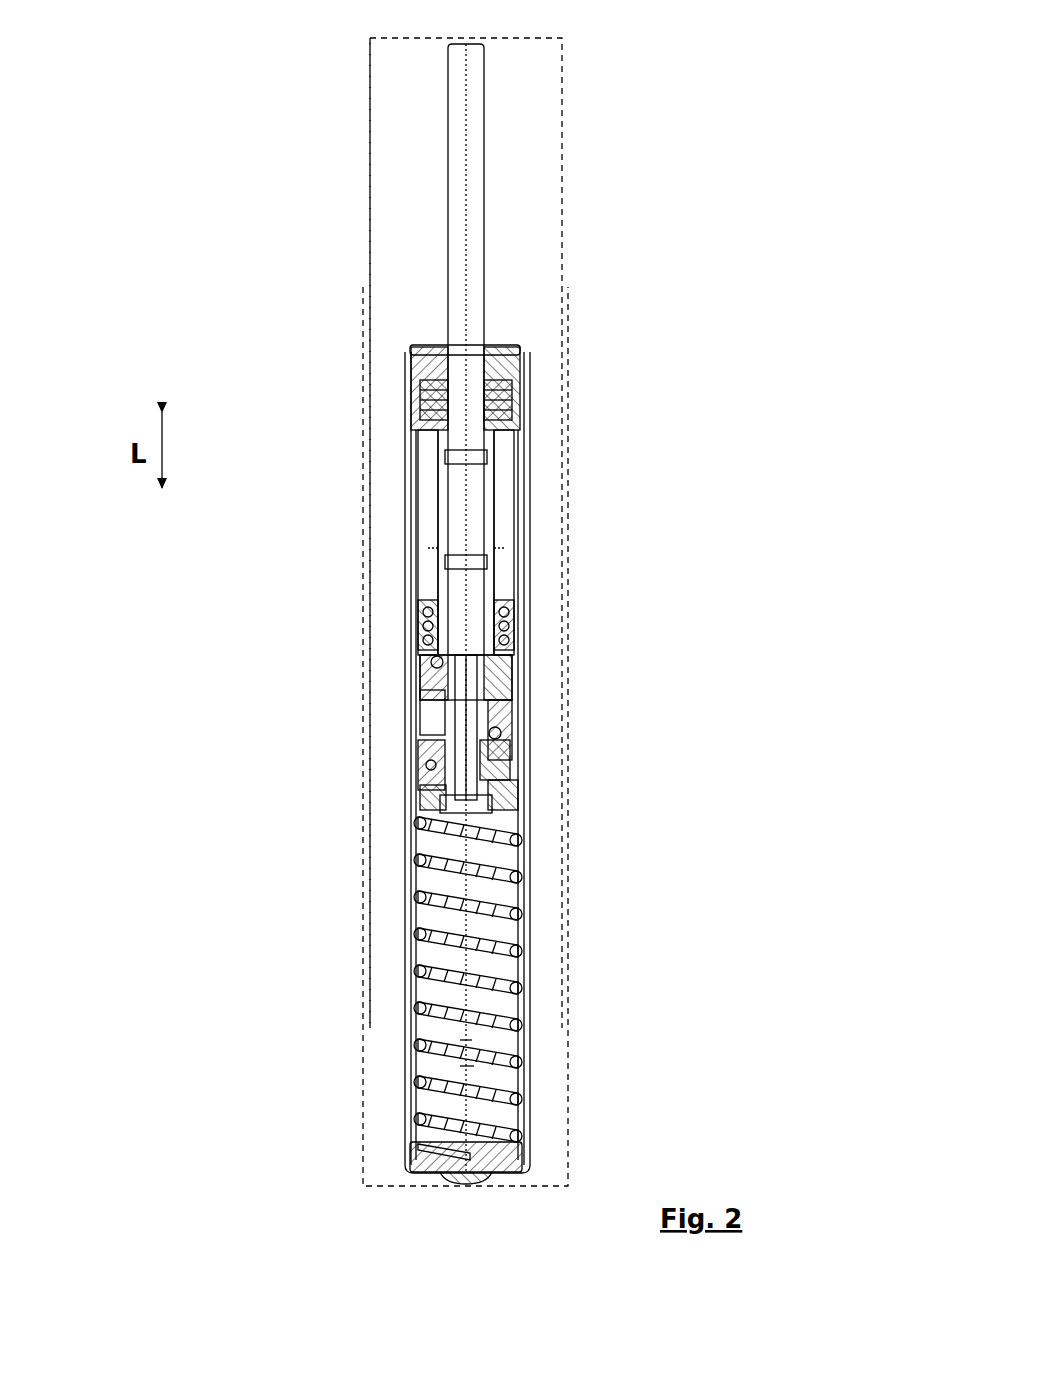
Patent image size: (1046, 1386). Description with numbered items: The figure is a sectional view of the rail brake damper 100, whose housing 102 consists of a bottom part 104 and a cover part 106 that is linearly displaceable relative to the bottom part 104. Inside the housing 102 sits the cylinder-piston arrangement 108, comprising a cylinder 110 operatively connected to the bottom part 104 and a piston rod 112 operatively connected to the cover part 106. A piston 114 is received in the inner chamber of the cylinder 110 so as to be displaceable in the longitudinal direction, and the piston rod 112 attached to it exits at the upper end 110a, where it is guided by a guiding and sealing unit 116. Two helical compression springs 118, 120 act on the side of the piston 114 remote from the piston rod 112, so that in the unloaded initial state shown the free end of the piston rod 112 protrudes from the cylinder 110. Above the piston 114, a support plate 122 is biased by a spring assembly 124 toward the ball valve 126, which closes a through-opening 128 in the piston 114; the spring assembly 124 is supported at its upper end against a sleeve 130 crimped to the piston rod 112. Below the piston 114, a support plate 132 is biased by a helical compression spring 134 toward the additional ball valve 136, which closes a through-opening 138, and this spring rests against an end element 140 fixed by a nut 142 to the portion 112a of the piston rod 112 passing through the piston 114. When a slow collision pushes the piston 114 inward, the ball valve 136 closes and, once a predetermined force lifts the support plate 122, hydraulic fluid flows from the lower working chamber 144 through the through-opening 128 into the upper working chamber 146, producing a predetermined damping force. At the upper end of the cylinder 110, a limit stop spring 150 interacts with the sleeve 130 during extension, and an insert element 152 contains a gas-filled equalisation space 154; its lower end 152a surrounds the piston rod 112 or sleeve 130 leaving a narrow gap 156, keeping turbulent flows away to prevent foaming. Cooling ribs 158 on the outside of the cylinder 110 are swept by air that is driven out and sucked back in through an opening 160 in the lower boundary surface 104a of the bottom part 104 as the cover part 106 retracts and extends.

The rail brake damper 100 is at (282, 100).
The housing 102 is at (265, 170).
The bottom part 104 is at (365, 1050).
The lower boundary surface 104a is at (385, 1188).
The cover part 106 is at (370, 262).
The cylinder-piston arrangement 108 is at (630, 100).
The cylinder 110 is at (522, 940).
The upper end of the cylinder 110a is at (520, 345).
The piston rod 112 is at (476, 278).
The portion of the piston rod 112a is at (462, 712).
The piston 114 is at (510, 668).
The guiding and sealing unit 116 is at (425, 363).
The helical compression spring 118 is at (478, 1052).
The helical compression spring 120 is at (472, 1068).
The support plate 122 is at (500, 652).
The spring assembly 124 is at (440, 630).
The ball valve 126 is at (436, 662).
The through-opening 128 is at (440, 695).
The sleeve 130 is at (448, 507).
The support plate 132 is at (505, 748).
The helical compression spring 134 is at (440, 773).
The additional ball valve 136 is at (497, 733).
The through-opening 138 is at (502, 692).
The end element 140 is at (515, 795).
The nut 142 is at (455, 805).
The lower working chamber 144 is at (450, 960).
The upper working chamber 146 is at (512, 620).
The limit stop spring 150 is at (505, 408).
The insert element 152 is at (518, 513).
The lower end of the insert element 152a is at (500, 600).
The equalisation space 154 is at (430, 455).
The narrow gap 156 is at (440, 597).
The cooling ribs 158 is at (410, 1005).
The opening 160 is at (395, 1187).